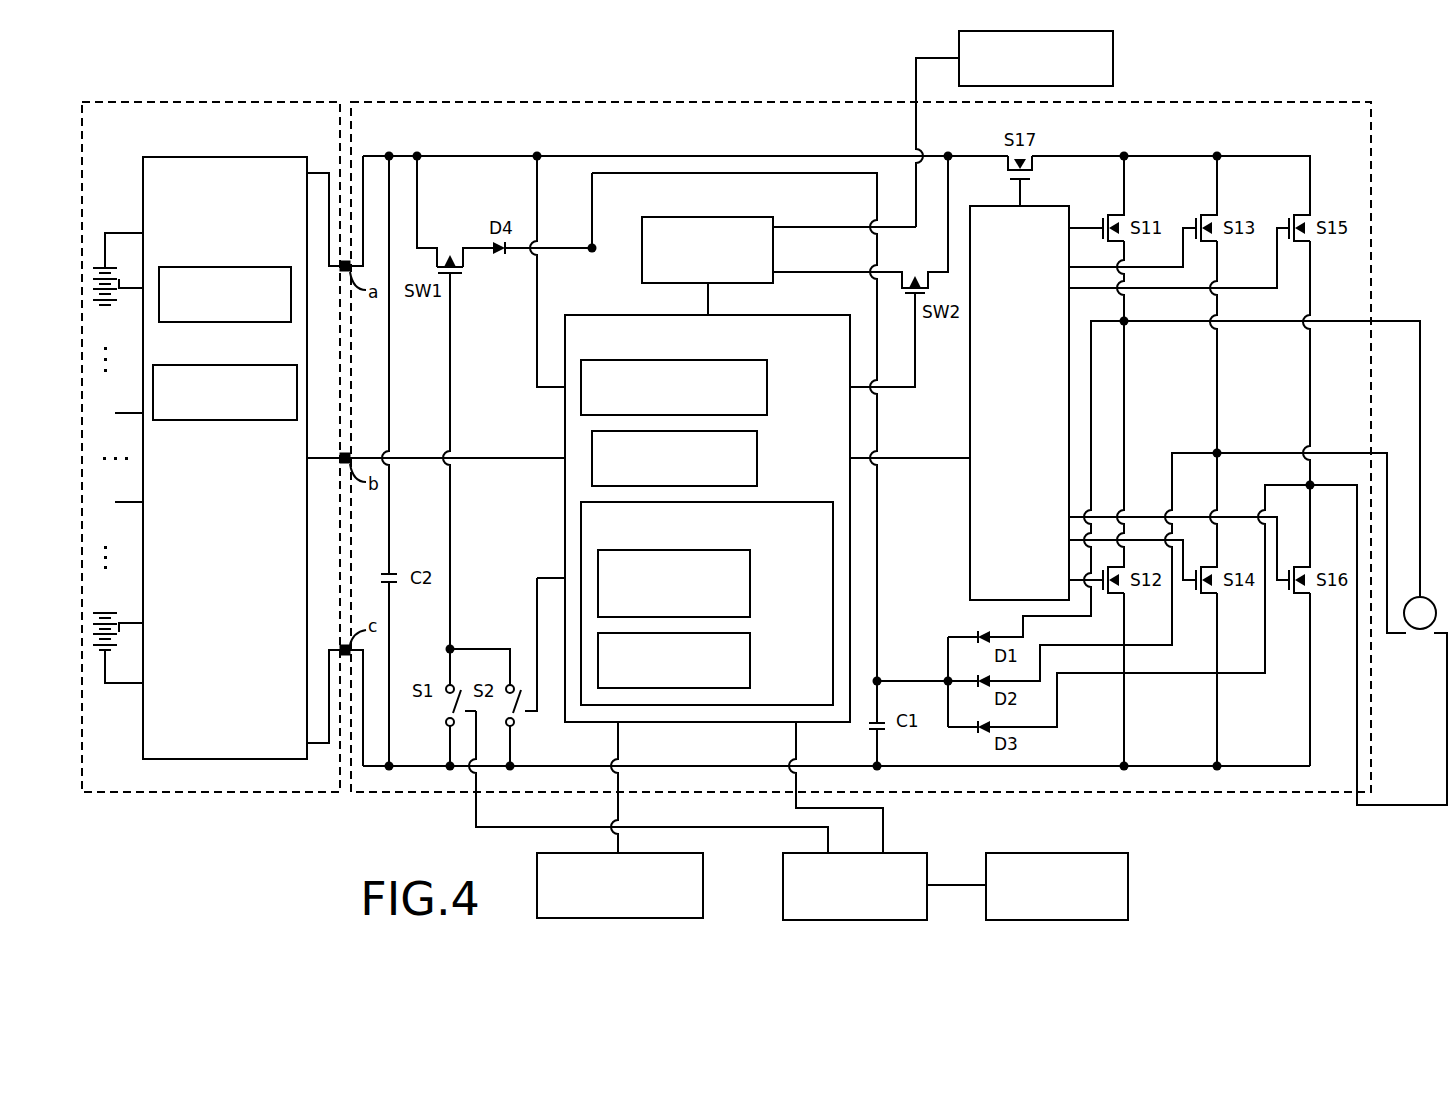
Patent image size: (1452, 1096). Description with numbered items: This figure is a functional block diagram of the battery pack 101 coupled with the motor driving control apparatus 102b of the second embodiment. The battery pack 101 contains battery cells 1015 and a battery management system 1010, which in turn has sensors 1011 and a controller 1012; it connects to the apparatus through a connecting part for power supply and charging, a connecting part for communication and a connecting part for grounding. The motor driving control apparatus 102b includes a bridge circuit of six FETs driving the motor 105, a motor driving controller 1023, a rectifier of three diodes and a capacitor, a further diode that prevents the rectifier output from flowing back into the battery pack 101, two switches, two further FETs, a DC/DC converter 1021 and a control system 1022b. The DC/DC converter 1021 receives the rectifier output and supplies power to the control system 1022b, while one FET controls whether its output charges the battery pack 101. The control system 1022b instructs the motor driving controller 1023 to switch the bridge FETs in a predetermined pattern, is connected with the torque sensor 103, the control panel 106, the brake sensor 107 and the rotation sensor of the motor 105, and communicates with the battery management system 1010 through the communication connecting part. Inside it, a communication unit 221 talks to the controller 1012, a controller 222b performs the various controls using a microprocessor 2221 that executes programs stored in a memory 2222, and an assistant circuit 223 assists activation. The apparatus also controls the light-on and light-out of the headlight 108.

The battery pack 101 is at (296, 102).
The motor driving control apparatus 102b is at (1371, 124).
The battery management system 1010 is at (268, 157).
The sensors 1011 is at (228, 267).
The controller 1012 is at (222, 365).
The battery cells 1015 is at (105, 688).
The DC/DC converter 1021 is at (715, 217).
The control system 1022b is at (788, 315).
The communication unit 221 is at (767, 390).
The assistant circuit 223 is at (757, 458).
The controller 222b is at (778, 502).
The microprocessor 2221 is at (750, 585).
The memory 2222 is at (750, 660).
The motor driving controller 1023 is at (1050, 206).
The headlight 108 is at (1113, 62).
The motor 105 is at (1416, 630).
The torque sensor 103 is at (703, 882).
The control panel 106 is at (927, 853).
The brake sensor 107 is at (1128, 885).